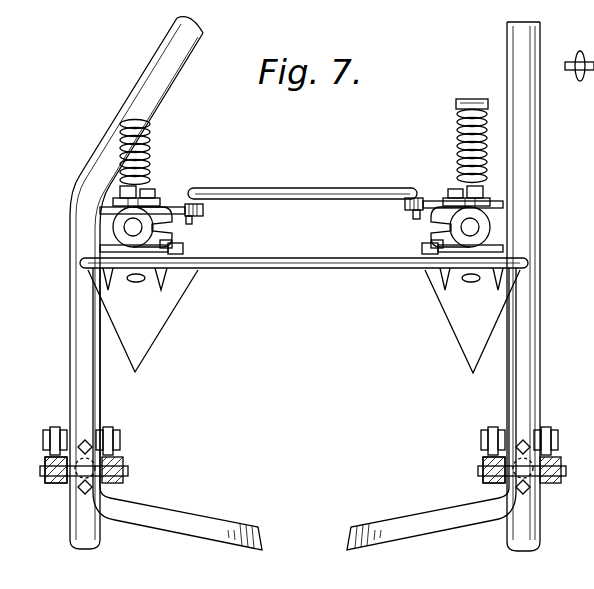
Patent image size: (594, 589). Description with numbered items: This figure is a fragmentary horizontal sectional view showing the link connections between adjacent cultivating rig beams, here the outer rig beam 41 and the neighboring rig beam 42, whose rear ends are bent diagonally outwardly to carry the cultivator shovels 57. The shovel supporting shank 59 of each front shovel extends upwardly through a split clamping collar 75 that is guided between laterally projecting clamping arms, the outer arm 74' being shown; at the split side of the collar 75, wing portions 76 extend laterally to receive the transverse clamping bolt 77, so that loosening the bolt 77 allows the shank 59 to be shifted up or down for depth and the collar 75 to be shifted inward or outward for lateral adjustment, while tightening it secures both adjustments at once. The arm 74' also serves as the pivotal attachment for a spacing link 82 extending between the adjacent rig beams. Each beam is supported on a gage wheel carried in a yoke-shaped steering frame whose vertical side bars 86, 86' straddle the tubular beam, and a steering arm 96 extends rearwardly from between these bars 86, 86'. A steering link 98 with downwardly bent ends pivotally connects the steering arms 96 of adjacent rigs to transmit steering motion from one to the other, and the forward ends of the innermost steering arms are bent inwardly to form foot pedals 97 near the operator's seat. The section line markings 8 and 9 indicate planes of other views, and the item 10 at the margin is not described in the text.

The section line 8 is at (522, 560).
The section line 9 is at (135, 268).
The bolt assembly 10 is at (593, 42).
The rig beam 41 is at (541, 542).
The rig beam 42 is at (93, 540).
The cultivator shovel 57 is at (153, 338).
The shovel supporting shank 59 is at (152, 224).
The clamping arm 74' is at (301, 234).
The split clamping collar 75 is at (115, 228).
The wing portion 76 is at (170, 240).
The clamping bolt 77 is at (150, 212).
The spacing link 82 is at (327, 179).
The vertical side bar 86 is at (317, 470).
The vertical side bar 86' is at (269, 490).
The steering arm 96 is at (88, 407).
The foot pedal 97 is at (223, 520).
The steering link 98 is at (326, 268).